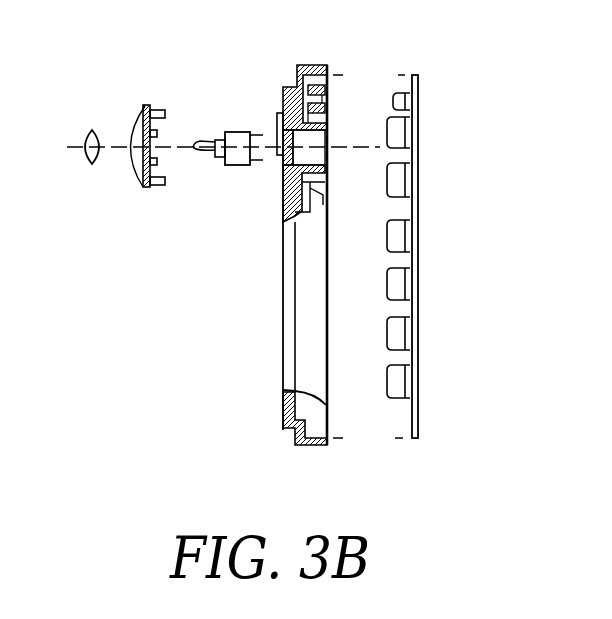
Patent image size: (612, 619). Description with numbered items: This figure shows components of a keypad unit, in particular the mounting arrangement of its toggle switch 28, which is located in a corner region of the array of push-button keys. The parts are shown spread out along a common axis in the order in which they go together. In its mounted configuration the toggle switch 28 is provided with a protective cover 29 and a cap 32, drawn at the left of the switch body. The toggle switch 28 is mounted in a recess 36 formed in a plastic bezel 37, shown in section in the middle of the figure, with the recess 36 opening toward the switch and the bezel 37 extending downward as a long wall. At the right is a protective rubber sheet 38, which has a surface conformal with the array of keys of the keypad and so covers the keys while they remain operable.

The toggle switch 28 is at (236, 131).
The protective cover 29 is at (145, 105).
The cap 32 is at (93, 130).
The recess 36 is at (330, 125).
The bezel 37 is at (302, 447).
The protective rubber sheet 38 is at (405, 230).